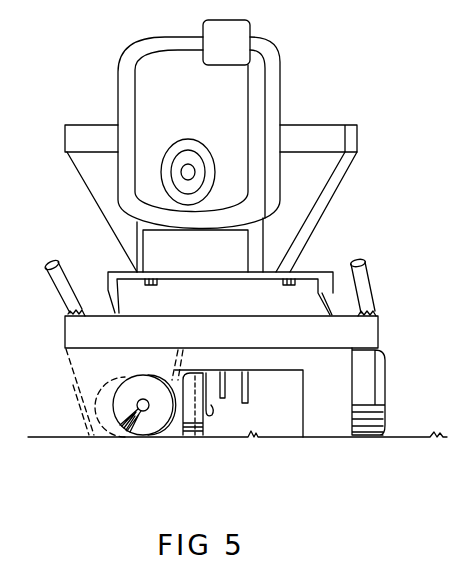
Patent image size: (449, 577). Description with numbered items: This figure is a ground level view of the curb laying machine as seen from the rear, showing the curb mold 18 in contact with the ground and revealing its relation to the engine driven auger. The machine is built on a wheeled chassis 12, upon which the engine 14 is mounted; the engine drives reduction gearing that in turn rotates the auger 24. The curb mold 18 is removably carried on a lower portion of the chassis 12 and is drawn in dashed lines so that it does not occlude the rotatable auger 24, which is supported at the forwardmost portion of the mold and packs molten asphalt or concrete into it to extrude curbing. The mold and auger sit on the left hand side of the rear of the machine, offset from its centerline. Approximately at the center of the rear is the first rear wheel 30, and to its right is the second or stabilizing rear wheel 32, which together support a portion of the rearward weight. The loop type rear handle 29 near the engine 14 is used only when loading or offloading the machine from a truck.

The wheeled chassis 12 is at (367, 331).
The engine 14 is at (258, 88).
The curb mold 18 is at (70, 397).
The auger 24 is at (133, 430).
The loop type rear handle 29 is at (362, 262).
The first rear wheel 30 is at (199, 434).
The second or stabilizing rear wheel 32 is at (372, 410).